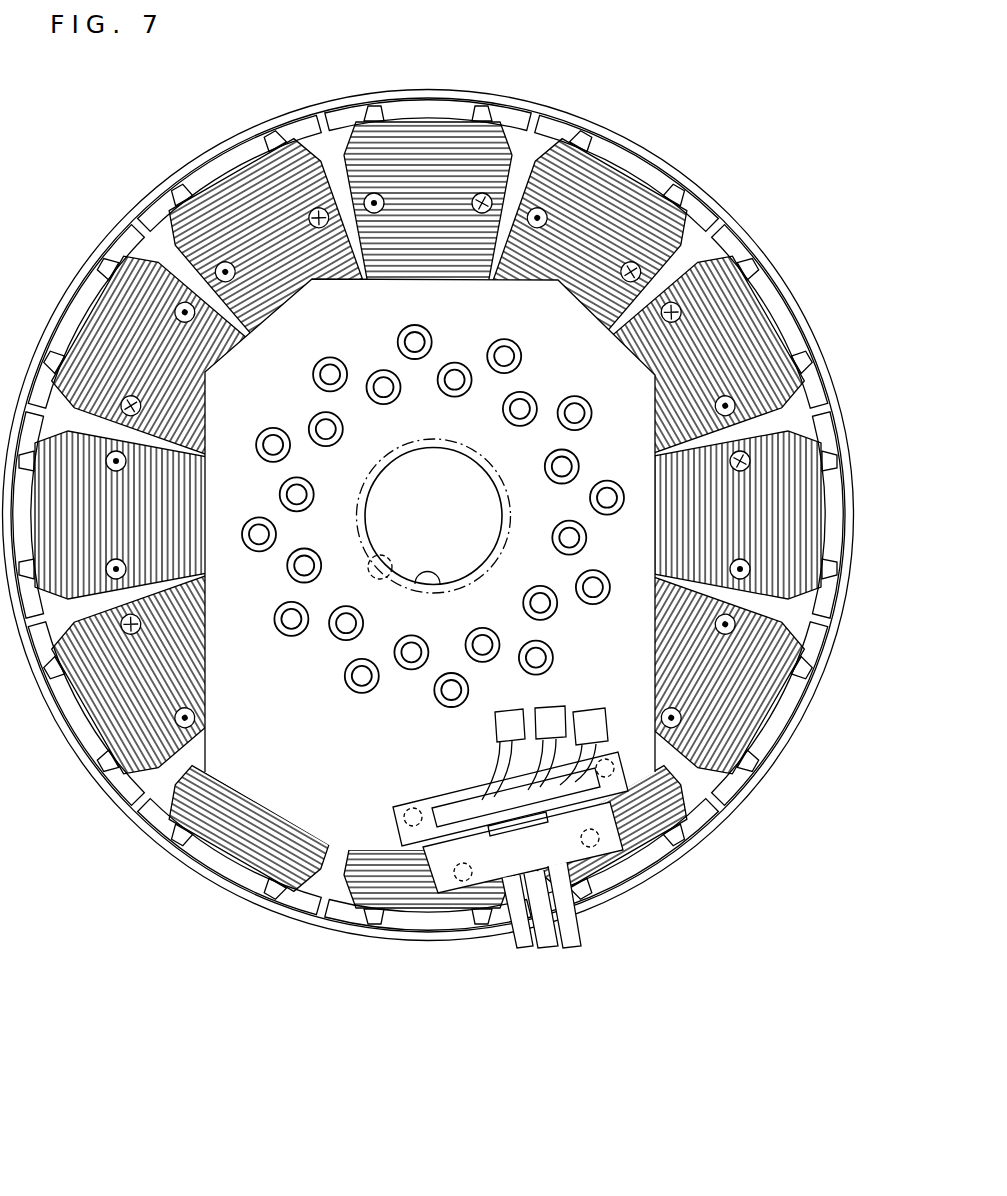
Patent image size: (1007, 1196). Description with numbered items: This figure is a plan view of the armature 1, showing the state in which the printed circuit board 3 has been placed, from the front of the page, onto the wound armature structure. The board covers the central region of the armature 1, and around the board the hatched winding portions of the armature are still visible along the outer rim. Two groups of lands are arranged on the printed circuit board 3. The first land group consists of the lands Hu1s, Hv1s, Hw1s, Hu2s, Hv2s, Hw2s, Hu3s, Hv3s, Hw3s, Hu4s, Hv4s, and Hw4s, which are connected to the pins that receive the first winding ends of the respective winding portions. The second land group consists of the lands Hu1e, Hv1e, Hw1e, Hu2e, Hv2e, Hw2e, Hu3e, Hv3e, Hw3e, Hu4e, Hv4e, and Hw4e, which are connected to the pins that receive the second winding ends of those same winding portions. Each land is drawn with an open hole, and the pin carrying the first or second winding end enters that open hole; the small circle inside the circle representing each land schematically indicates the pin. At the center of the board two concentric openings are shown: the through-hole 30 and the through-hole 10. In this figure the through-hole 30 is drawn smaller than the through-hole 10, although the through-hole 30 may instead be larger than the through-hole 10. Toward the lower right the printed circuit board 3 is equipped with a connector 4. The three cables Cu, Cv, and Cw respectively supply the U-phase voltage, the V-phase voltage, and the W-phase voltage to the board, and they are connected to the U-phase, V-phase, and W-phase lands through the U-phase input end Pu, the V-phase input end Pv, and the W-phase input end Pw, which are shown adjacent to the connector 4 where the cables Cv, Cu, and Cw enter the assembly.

The armature 1 is at (328, 936).
The printed circuit board 3 is at (280, 797).
The connector 4 is at (580, 855).
The through-hole 10 is at (394, 580).
The through-hole 30 is at (440, 584).
The land Hu1s is at (602, 601).
The land Hu1e is at (528, 592).
The land Hu2s is at (590, 499).
The land Hu2e is at (584, 545).
The land Hu3s is at (257, 450).
The land Hu3e is at (311, 420).
The land Hu4s is at (276, 533).
The land Hu4e is at (281, 490).
The land Hv1s is at (452, 707).
The land Hv1e is at (409, 670).
The land Hv2s is at (553, 658).
The land Hv2e is at (506, 616).
The land Hv3s is at (411, 326).
The land Hv3e is at (454, 363).
The land Hv4s is at (330, 357).
The land Hv4e is at (378, 371).
The land Hw1s is at (586, 404).
The land Hw1e is at (579, 464).
The land Hw2s is at (505, 339).
The land Hw2e is at (526, 393).
The land Hw3s is at (282, 634).
The land Hw3e is at (289, 574).
The land Hw4s is at (355, 692).
The land Hw4e is at (341, 640).
The V-phase input end Pv is at (515, 708).
The U-phase input end Pu is at (557, 707).
The W-phase input end Pw is at (594, 708).
The cable Cv is at (519, 941).
The cable Cu is at (555, 939).
The cable Cw is at (593, 935).